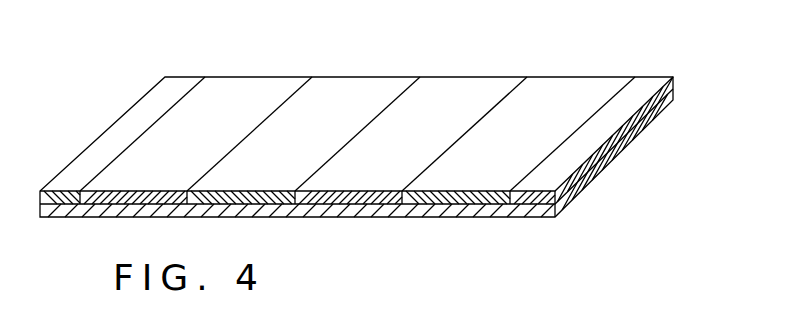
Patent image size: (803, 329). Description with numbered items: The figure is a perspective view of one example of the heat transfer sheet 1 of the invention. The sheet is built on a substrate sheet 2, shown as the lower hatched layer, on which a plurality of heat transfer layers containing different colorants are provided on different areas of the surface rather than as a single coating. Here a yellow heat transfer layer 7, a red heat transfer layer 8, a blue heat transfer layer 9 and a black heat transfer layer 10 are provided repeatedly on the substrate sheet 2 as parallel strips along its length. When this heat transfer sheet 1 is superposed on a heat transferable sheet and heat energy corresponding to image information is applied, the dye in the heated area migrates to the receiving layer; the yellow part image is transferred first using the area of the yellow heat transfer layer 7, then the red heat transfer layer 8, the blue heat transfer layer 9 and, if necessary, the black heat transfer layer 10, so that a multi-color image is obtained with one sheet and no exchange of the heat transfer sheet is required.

The heat transfer sheet 1 is at (630, 150).
The substrate sheet 2 is at (448, 218).
The yellow heat transfer layer 7 is at (253, 88).
The red heat transfer layer 8 is at (357, 88).
The blue heat transfer layer 9 is at (455, 88).
The black heat transfer layer 10 is at (183, 88).